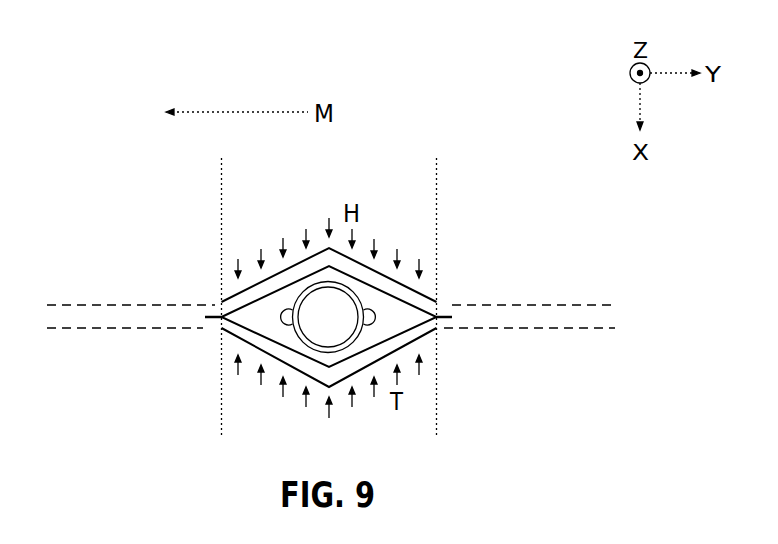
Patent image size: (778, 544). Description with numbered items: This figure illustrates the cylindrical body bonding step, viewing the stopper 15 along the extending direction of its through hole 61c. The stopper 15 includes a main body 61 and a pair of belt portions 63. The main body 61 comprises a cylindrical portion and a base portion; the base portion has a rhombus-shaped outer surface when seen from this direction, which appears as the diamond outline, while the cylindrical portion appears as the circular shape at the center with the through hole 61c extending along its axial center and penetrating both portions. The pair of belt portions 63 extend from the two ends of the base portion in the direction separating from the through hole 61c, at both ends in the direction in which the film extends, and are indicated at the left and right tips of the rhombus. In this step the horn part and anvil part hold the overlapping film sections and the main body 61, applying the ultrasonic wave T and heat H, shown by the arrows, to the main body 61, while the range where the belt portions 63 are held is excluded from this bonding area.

The main body 61 is at (280, 292).
The through hole 61c is at (316, 328).
The stopper 15 is at (395, 316).
The belt portions 63 is at (215, 318).